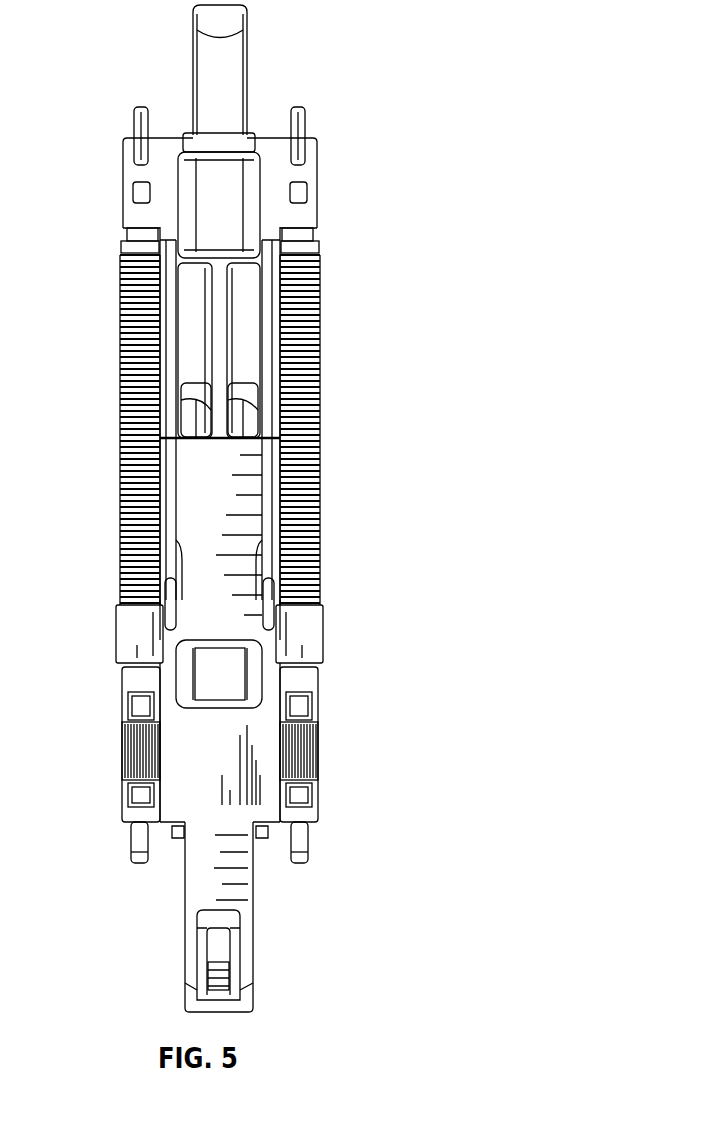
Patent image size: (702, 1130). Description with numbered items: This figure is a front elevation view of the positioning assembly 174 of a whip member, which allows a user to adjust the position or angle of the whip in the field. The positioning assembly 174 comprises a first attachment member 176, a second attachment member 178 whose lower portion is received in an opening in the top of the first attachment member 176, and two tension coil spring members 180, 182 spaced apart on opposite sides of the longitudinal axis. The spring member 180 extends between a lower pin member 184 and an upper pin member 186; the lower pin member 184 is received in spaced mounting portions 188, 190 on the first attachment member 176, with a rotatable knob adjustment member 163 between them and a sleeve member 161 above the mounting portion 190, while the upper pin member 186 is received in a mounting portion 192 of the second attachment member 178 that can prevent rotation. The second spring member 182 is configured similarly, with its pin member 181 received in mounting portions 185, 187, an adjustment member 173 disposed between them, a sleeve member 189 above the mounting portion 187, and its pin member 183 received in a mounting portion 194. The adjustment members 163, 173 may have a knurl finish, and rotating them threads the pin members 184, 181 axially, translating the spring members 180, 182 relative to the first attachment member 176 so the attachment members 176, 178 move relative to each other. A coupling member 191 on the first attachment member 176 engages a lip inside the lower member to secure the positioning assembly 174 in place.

The positioning assembly 174 is at (103, 292).
The first attachment member 176 is at (197, 565).
The second attachment member 178 is at (223, 147).
The spring member 180 is at (122, 475).
The second spring member 182 is at (318, 425).
The pin member 183 is at (298, 118).
The pin member 186 is at (138, 126).
The mounting portion 192 is at (132, 173).
The mounting portion 194 is at (306, 170).
The sleeve member 161 is at (125, 630).
The sleeve member 189 is at (310, 613).
The mounting portion 190 is at (130, 683).
The mounting portion 187 is at (305, 682).
The adjustment member 163 is at (128, 742).
The adjustment member 173 is at (312, 745).
The mounting portion 188 is at (132, 812).
The mounting portion 185 is at (307, 812).
The pin member 184 is at (138, 848).
The pin member 181 is at (300, 847).
The coupling member 191 is at (216, 977).